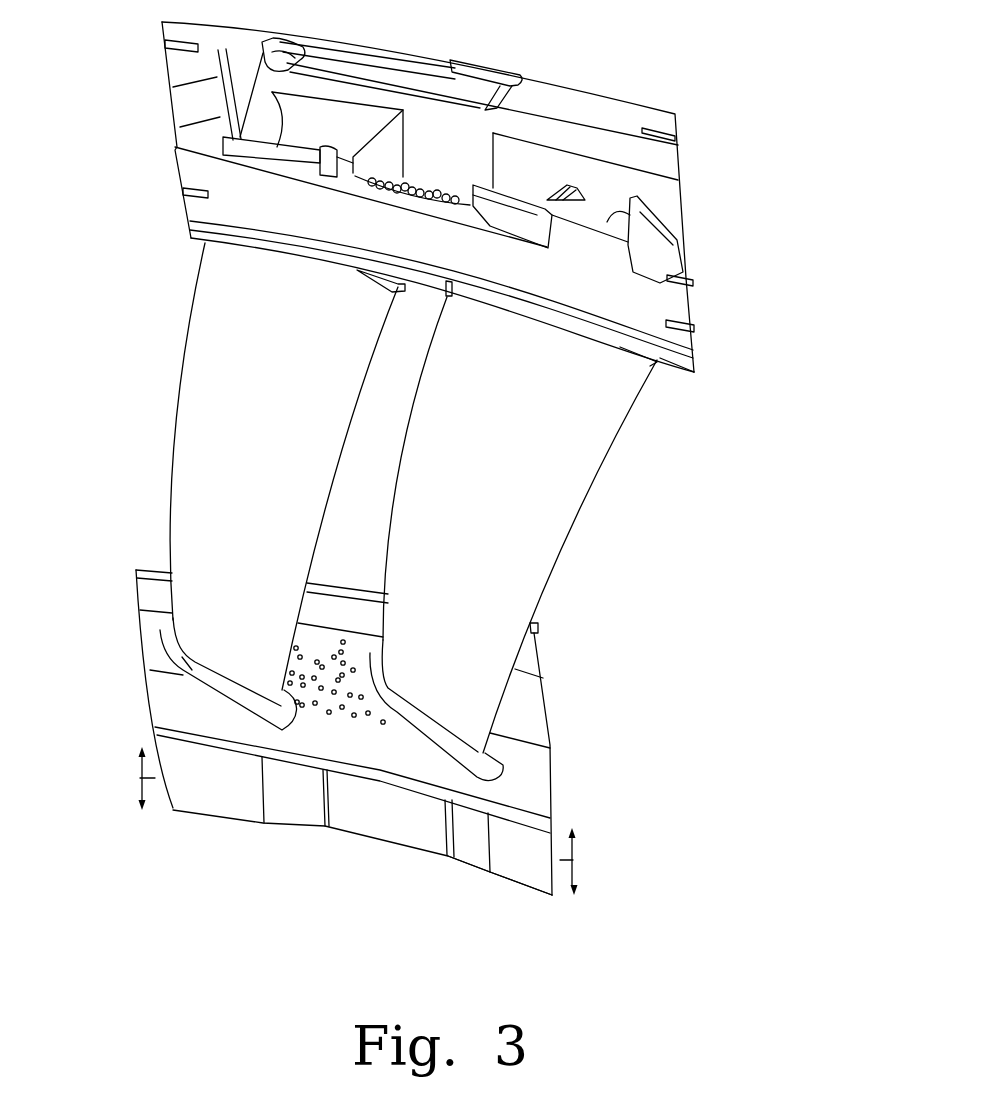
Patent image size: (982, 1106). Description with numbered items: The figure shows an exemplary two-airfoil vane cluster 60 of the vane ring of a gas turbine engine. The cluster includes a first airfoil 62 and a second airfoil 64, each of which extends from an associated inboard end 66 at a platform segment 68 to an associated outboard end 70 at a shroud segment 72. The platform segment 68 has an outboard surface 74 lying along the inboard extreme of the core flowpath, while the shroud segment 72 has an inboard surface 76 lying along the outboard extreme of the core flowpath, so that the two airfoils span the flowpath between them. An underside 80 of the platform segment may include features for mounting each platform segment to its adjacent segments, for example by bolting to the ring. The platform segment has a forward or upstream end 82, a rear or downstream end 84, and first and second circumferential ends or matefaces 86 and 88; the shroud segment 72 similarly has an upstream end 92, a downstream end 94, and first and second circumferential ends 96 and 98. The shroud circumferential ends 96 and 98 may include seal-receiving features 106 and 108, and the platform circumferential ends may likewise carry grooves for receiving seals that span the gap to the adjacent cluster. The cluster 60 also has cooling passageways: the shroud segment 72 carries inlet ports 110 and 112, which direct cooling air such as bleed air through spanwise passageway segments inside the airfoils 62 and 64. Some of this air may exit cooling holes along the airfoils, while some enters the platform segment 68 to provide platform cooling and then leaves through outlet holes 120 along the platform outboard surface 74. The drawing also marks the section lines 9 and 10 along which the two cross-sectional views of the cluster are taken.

The two-airfoil cluster 60 is at (761, 462).
The first airfoil 62 is at (194, 432).
The second airfoil 64 is at (562, 497).
The inboard end 66 is at (448, 712).
The platform segment 68 is at (564, 739).
The outboard end 70 is at (371, 295).
The shroud segment 72 is at (694, 131).
The outboard surface 74 is at (535, 703).
The inboard surface 76 is at (680, 372).
The underside 80 is at (521, 884).
The forward/upstream end 82 is at (347, 578).
The rear/downstream end 84 is at (360, 778).
The first circumferential end 86 is at (158, 728).
The second circumferential end 88 is at (553, 790).
The upstream end 92 is at (530, 72).
The downstream end 94 is at (507, 278).
The first circumferential end 96 is at (186, 220).
The second circumferential end 98 is at (697, 312).
The seal-receiving feature 106 is at (709, 323).
The seal-receiving feature 108 is at (169, 193).
The inlet port 110 is at (343, 134).
The inlet port 112 is at (592, 188).
The outlet holes 120 is at (352, 713).
The line 9- 9 is at (359, 809).
The line 10- 10 is at (359, 844).